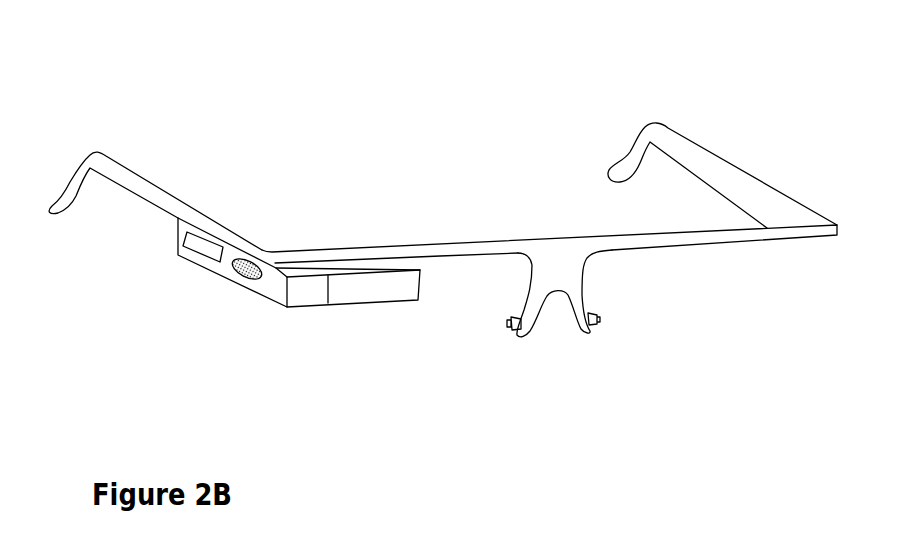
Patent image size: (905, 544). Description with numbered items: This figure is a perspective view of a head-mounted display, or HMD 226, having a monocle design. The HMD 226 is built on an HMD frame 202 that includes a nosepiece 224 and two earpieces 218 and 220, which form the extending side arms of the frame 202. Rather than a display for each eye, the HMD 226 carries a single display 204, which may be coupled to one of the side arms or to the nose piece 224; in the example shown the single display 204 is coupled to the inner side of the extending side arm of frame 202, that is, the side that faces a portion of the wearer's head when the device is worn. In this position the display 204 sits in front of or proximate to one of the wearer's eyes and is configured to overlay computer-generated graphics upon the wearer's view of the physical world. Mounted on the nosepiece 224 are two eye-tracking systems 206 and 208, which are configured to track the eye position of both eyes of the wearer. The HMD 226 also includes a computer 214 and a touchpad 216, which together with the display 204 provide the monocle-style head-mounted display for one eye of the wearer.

The HMD frame 202 is at (448, 247).
The single display 204 is at (383, 305).
The eye-tracking system 206 is at (527, 337).
The eye-tracking system 208 is at (585, 337).
The computer 214 is at (212, 237).
The touchpad 216 is at (257, 260).
The earpiece 218 is at (135, 174).
The earpiece 220 is at (695, 142).
The nosepiece 224 is at (568, 298).
The HMD 226 is at (262, 96).